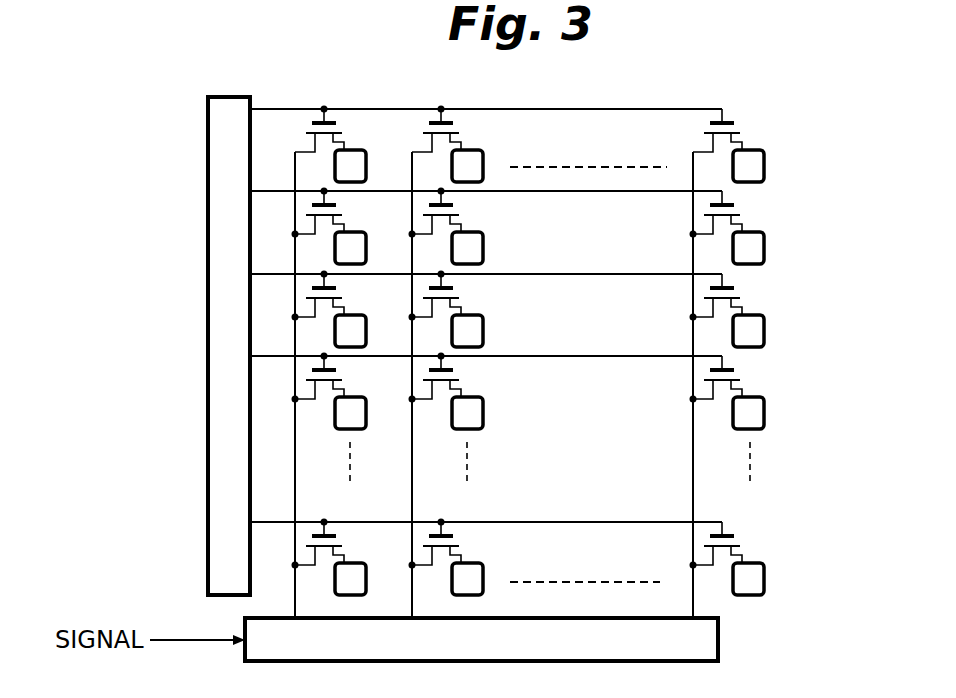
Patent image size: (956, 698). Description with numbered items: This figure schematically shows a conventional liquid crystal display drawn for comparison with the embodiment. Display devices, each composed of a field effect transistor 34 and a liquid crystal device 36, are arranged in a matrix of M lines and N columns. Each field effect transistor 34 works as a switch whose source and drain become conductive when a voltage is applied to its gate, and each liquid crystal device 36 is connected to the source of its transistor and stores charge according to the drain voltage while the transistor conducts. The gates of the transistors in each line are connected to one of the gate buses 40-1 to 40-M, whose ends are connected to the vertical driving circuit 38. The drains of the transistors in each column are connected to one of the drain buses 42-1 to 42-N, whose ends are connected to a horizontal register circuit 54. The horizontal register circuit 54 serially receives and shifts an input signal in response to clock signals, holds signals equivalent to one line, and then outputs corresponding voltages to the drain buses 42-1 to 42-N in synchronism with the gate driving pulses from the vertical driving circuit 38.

The field effect transistor 34 is at (737, 128).
The liquid crystal device 36 is at (765, 165).
The vertical driving circuit 38 is at (207, 199).
The gate bus 40-1 is at (585, 109).
The gate bus 40-M is at (517, 522).
The drain bus 42-1 is at (295, 505).
The drain bus 42-N is at (693, 510).
The horizontal register circuit 54 is at (718, 640).